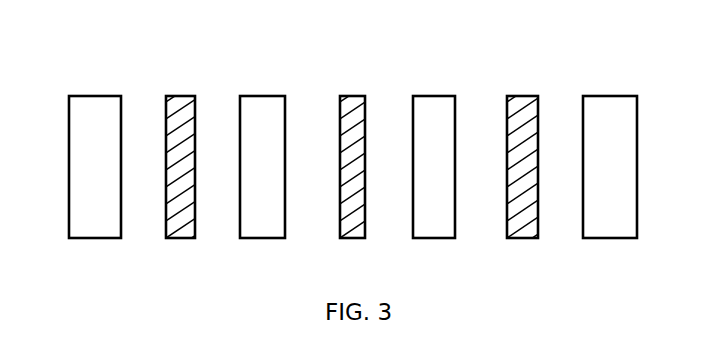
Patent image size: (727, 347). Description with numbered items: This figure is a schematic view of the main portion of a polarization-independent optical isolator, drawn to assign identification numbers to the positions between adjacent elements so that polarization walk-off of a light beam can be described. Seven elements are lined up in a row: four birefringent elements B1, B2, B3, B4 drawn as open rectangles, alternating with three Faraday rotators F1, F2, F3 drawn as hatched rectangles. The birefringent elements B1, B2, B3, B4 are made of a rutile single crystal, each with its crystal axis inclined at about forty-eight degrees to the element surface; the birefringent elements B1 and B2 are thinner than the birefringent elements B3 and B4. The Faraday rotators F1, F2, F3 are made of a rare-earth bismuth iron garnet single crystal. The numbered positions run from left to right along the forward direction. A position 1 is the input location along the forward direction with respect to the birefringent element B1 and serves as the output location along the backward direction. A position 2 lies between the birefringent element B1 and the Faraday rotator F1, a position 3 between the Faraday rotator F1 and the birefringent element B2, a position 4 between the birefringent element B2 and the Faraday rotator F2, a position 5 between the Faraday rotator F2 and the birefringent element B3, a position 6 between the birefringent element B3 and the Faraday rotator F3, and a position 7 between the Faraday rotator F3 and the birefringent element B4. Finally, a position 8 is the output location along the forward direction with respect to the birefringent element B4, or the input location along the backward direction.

The birefringent element B1 is at (95, 96).
The Faraday rotator F1 is at (180, 96).
The birefringent element B2 is at (258, 96).
The Faraday rotator F2 is at (348, 96).
The birefringent element B3 is at (425, 96).
The Faraday rotator F3 is at (515, 96).
The birefringent element B4 is at (603, 96).
The position 1 is at (37, 164).
The position 2 is at (143, 164).
The position 3 is at (220, 164).
The position 4 is at (317, 164).
The position 5 is at (392, 164).
The position 6 is at (485, 164).
The position 7 is at (562, 164).
The position 8 is at (658, 164).